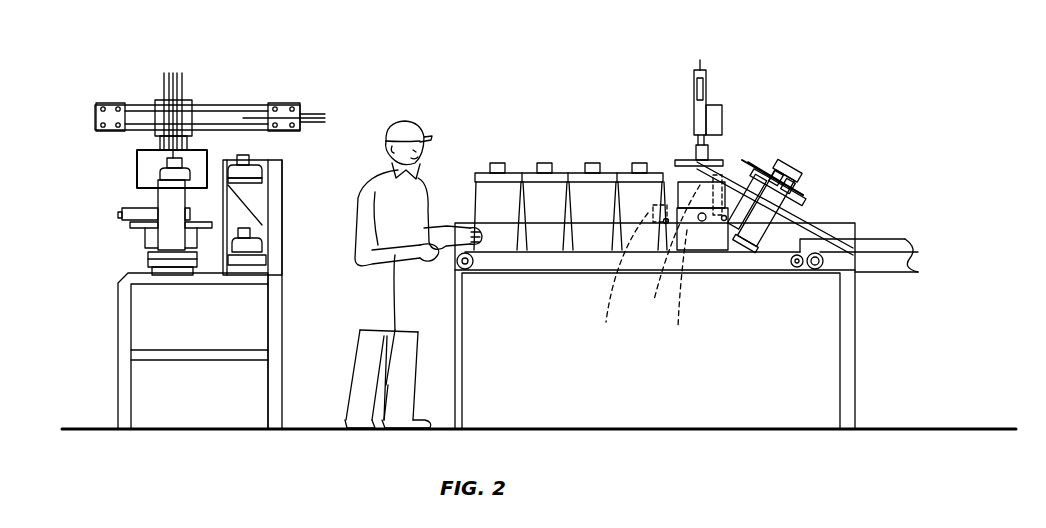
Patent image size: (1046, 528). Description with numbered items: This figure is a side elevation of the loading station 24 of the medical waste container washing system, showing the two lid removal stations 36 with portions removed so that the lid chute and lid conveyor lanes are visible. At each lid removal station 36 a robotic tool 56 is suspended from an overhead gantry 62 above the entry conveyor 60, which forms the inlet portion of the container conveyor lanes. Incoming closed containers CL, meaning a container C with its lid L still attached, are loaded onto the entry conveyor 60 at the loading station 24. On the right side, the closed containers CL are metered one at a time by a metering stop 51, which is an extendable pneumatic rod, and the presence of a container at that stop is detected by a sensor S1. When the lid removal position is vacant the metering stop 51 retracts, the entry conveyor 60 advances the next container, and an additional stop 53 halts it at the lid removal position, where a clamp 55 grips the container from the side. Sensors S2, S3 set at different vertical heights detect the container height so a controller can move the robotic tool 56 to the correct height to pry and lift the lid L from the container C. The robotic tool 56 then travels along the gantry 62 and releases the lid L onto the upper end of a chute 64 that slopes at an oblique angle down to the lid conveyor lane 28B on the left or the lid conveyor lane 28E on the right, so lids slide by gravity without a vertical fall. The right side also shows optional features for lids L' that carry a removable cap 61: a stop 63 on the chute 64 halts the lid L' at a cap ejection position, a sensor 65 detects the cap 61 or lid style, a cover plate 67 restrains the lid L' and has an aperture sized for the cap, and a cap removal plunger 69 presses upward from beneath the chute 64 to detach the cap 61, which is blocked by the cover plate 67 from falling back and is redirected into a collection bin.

The lid removal station 36 is at (118, 66).
The overhead gantry 62 is at (220, 105).
The robotic tool 56 is at (137, 165).
The lid L is at (199, 203).
The container C is at (165, 237).
The entry conveyor 60 is at (148, 262).
The lid conveyor lane 28B is at (245, 262).
The loading station 24 is at (406, 100).
The closed container CL is at (580, 188).
The metering stop 51 is at (662, 216).
The clamp 55 is at (672, 212).
The lid with removable cap L' is at (738, 147).
The cover plate 67 is at (752, 160).
The removable cap 61 is at (790, 180).
The sensor 65 is at (795, 198).
The chute 64 is at (810, 222).
The lid conveyor lane 28E is at (888, 242).
The sensor S1 is at (620, 283).
The sensor S2 is at (668, 255).
The sensor S3 is at (680, 291).
The additional stop 53 is at (735, 232).
The cap removal plunger 69 is at (745, 238).
The stop 63 is at (770, 240).